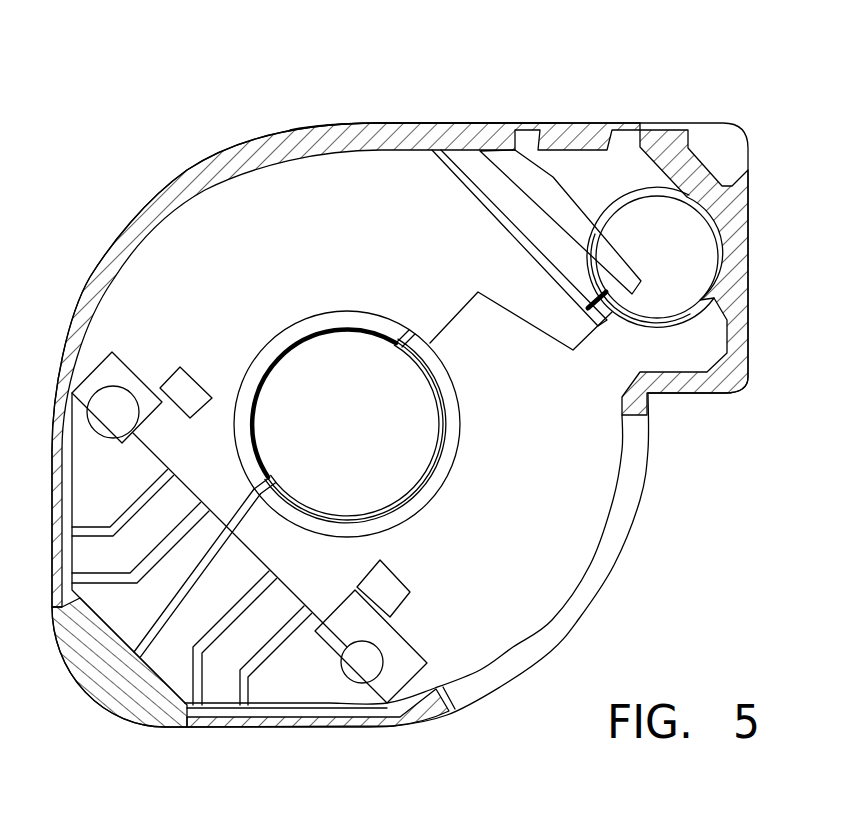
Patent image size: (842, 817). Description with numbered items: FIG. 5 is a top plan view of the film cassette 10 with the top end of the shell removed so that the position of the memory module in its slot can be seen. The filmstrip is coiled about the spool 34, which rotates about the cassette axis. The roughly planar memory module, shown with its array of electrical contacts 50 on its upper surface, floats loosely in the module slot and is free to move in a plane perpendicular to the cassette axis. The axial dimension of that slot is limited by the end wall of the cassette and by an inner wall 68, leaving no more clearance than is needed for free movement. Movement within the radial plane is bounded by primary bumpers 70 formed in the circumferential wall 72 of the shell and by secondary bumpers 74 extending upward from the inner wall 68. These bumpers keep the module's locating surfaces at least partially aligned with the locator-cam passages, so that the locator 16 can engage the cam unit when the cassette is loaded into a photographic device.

The film cassette 10 is at (456, 100).
The locator 16 is at (426, 660).
The spool 34 is at (448, 424).
The electrical contacts 50 is at (182, 668).
The inner wall 68 is at (228, 202).
The primary bumpers 70 is at (254, 716).
The circumferential wall 72 is at (347, 123).
The secondary bumpers 74 is at (172, 405).